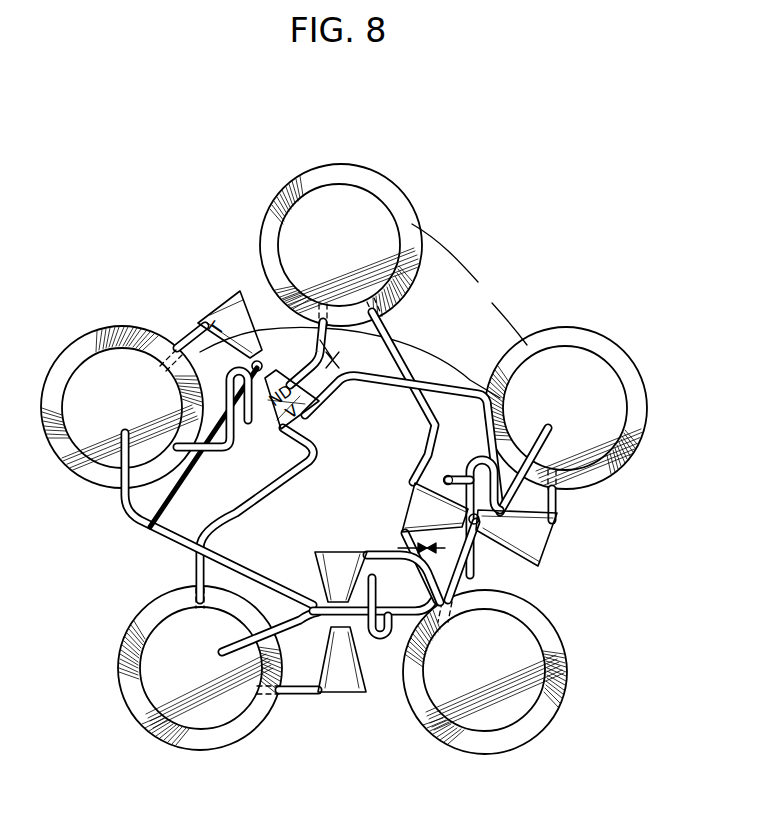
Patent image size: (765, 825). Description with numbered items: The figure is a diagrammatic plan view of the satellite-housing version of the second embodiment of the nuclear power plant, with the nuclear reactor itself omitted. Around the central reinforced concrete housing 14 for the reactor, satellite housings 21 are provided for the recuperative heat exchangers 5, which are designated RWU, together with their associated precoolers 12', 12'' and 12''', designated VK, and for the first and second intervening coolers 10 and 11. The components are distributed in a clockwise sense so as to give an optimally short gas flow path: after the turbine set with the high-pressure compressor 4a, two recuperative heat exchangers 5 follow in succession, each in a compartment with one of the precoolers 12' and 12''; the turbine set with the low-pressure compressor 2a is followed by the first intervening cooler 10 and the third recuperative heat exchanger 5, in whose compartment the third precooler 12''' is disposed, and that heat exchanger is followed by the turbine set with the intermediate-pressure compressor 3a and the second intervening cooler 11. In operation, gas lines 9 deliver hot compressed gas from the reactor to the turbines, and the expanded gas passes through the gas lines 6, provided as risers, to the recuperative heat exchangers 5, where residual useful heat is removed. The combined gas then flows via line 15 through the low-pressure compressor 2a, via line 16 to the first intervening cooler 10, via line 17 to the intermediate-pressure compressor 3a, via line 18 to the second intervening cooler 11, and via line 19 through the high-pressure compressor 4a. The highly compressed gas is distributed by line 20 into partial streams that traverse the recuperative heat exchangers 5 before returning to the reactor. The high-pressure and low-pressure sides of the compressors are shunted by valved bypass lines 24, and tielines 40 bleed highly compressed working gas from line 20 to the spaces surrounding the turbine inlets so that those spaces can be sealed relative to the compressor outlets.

The intervening cooler 10 is at (293, 222).
The intervening cooler 11 is at (462, 715).
The recuperative heat exchanger 5 is at (100, 370).
The precooler 12' is at (81, 419).
The precooler 12'' is at (152, 646).
The precooler 12''' is at (618, 421).
The gas line 6 is at (190, 343).
The gas line 9 is at (248, 428).
The reinforced concrete housing 14 is at (426, 362).
The line 15 is at (442, 392).
The line 16 is at (300, 368).
The line 17 is at (395, 345).
The line 18 is at (470, 592).
The line 19 is at (365, 552).
The high-pressure compressed gas line 20 is at (548, 437).
The satellite housing 21 is at (469, 284).
The valved bypass line 24 is at (334, 360).
The tieline 40 is at (166, 520).
The low-pressure compressor 2a is at (310, 418).
The intermediate-pressure compressor 3a is at (405, 515).
The high-pressure compressor 4a is at (320, 552).